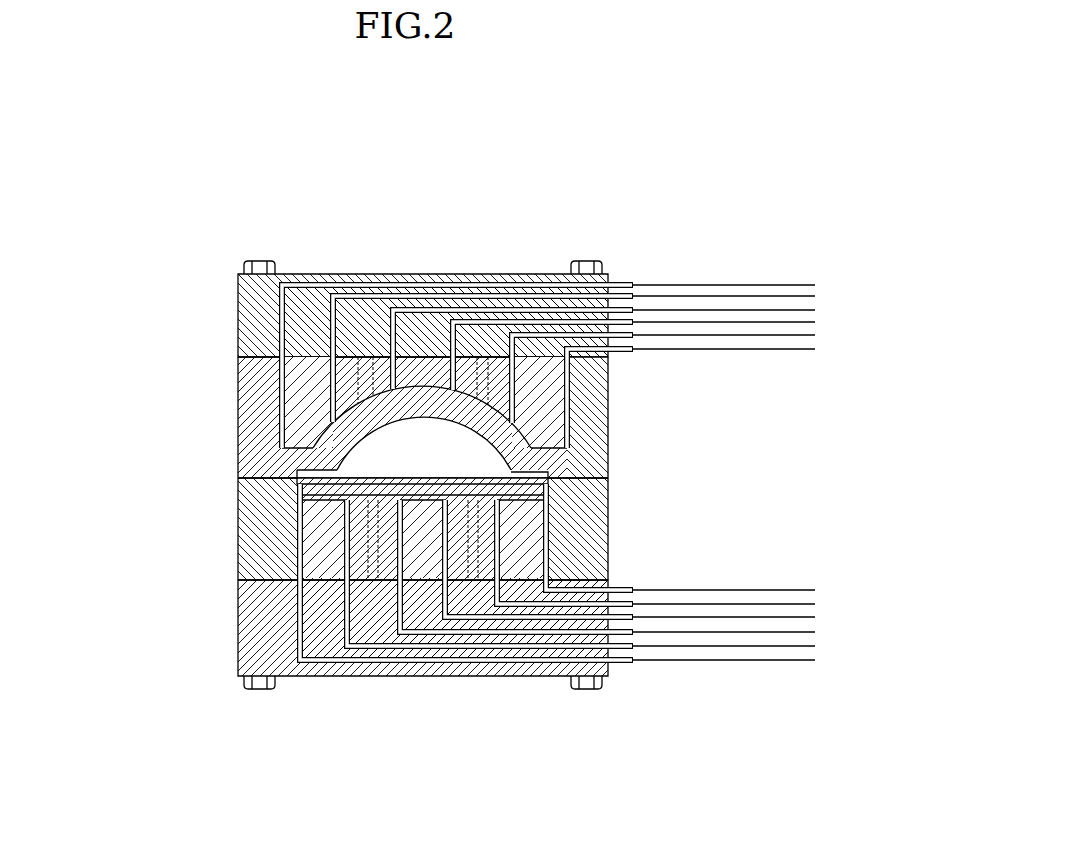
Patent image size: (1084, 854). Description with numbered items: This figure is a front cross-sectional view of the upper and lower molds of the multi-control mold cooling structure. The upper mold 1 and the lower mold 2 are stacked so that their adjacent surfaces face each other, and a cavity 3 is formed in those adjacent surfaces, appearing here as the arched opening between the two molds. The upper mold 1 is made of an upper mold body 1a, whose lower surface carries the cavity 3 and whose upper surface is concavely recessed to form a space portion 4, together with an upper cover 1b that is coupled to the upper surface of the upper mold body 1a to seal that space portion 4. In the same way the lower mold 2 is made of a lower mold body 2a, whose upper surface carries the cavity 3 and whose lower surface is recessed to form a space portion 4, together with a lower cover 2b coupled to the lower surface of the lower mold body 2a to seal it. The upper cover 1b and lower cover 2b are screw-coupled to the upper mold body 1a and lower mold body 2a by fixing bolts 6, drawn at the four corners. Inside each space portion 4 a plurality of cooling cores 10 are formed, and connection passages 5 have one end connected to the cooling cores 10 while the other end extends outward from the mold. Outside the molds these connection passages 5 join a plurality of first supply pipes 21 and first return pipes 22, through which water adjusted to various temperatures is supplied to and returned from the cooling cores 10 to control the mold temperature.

The upper mold 1 is at (342, 332).
The upper mold body 1a is at (238, 423).
The upper cover 1b is at (386, 274).
The lower mold 2 is at (331, 632).
The lower mold body 2a is at (238, 533).
The lower cover 2b is at (400, 677).
The cavity 3 is at (298, 466).
The space portion 4 is at (550, 410).
The connection passage 5 is at (497, 300).
The fixing bolt 6 is at (259, 261).
The cooling core 10 is at (303, 356).
The first supply pipe 21 is at (715, 282).
The first return pipe 22 is at (766, 352).